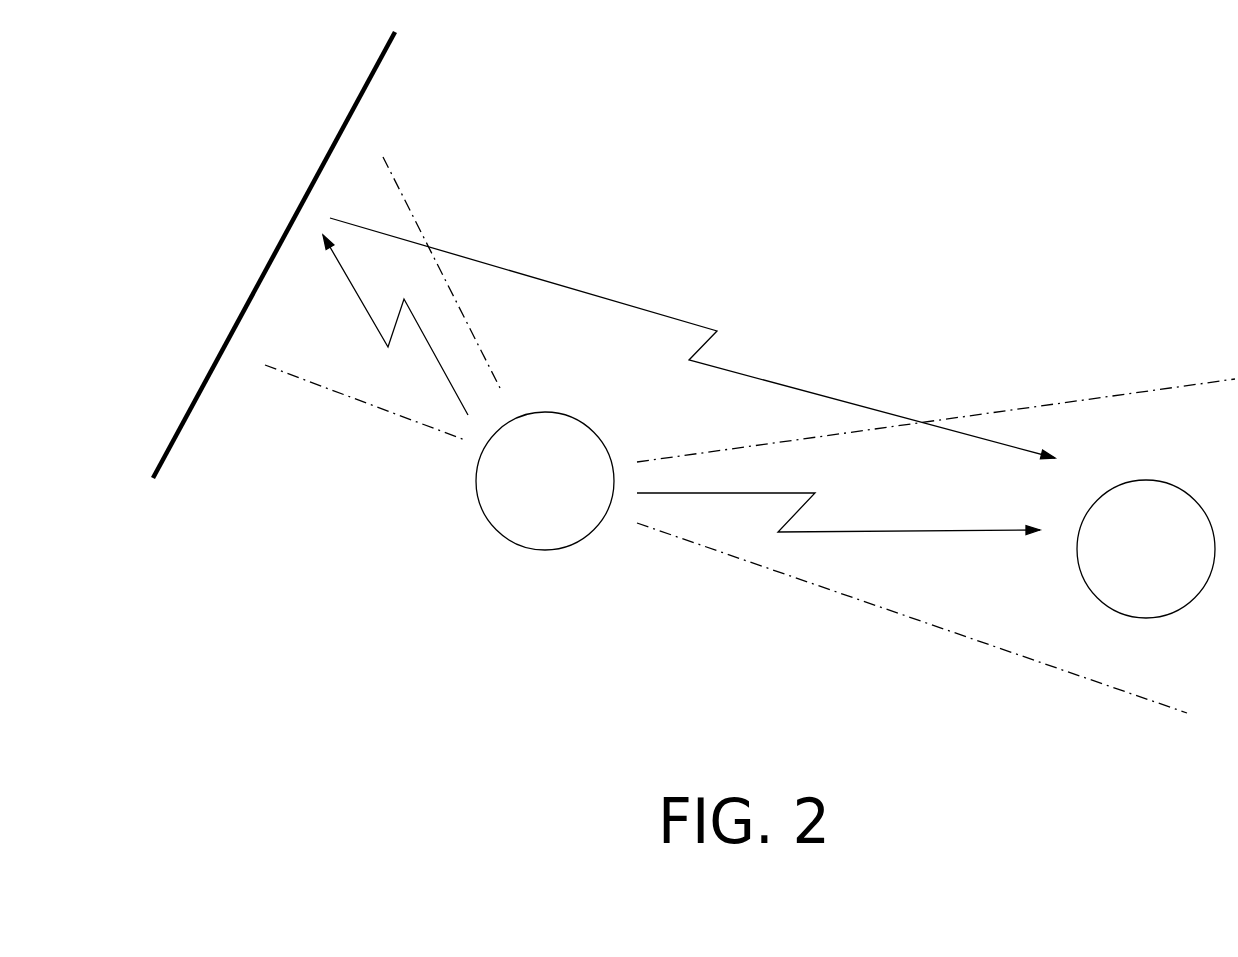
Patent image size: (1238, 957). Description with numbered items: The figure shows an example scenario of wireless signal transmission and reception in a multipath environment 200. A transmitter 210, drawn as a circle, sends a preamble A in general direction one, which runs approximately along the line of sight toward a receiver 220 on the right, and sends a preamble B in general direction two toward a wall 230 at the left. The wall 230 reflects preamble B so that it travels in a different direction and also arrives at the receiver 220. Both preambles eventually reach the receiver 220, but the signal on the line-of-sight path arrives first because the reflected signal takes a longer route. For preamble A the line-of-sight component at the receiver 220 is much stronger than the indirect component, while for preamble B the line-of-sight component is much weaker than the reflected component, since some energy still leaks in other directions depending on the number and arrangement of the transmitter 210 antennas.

The multipath environment 200 is at (960, 80).
The transmitter 210 is at (529, 504).
The receiver 220 is at (1130, 572).
The wall 230 is at (274, 255).